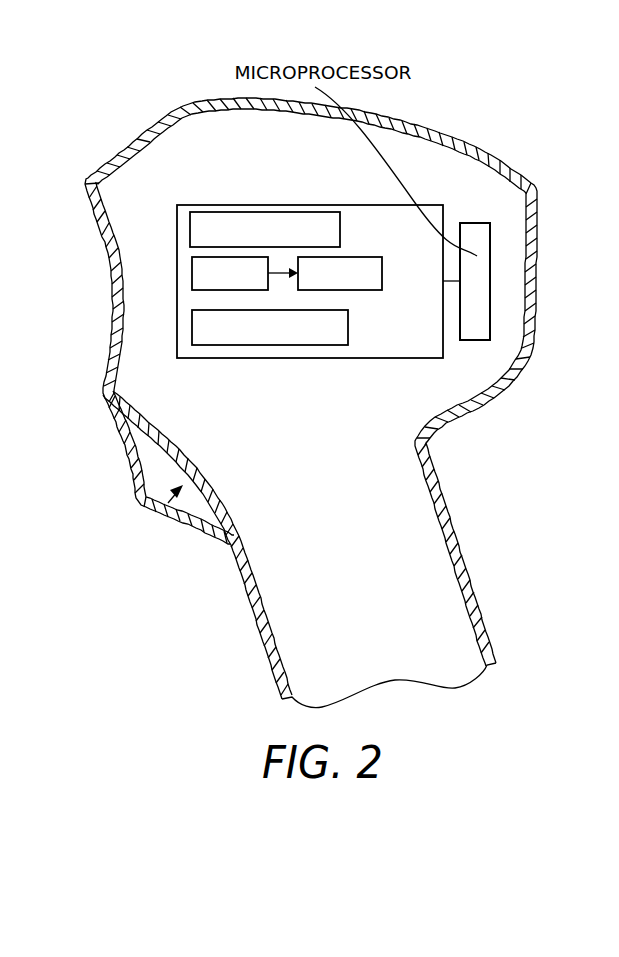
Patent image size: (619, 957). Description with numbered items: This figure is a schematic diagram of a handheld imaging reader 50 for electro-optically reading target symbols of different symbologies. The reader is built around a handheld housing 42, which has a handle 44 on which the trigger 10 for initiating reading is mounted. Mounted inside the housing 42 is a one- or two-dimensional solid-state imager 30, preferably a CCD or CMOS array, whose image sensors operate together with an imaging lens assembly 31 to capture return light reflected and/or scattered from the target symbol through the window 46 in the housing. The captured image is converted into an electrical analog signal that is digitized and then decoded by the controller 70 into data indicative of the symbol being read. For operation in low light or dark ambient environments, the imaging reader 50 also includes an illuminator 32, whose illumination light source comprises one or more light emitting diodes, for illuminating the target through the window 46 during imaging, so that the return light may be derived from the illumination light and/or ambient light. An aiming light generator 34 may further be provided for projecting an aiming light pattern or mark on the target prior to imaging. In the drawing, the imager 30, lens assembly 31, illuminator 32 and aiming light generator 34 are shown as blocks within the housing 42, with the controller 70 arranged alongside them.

The trigger 10 is at (144, 548).
The imaging reader 50 is at (548, 93).
The handheld housing 42 is at (538, 274).
The handle 44 is at (463, 539).
The window 46 is at (111, 280).
The controller 70 is at (475, 223).
The illuminator 32 is at (340, 230).
The imaging lens assembly 31 is at (192, 273).
The solid-state imager 30 is at (382, 273).
The aiming light generator 34 is at (348, 327).